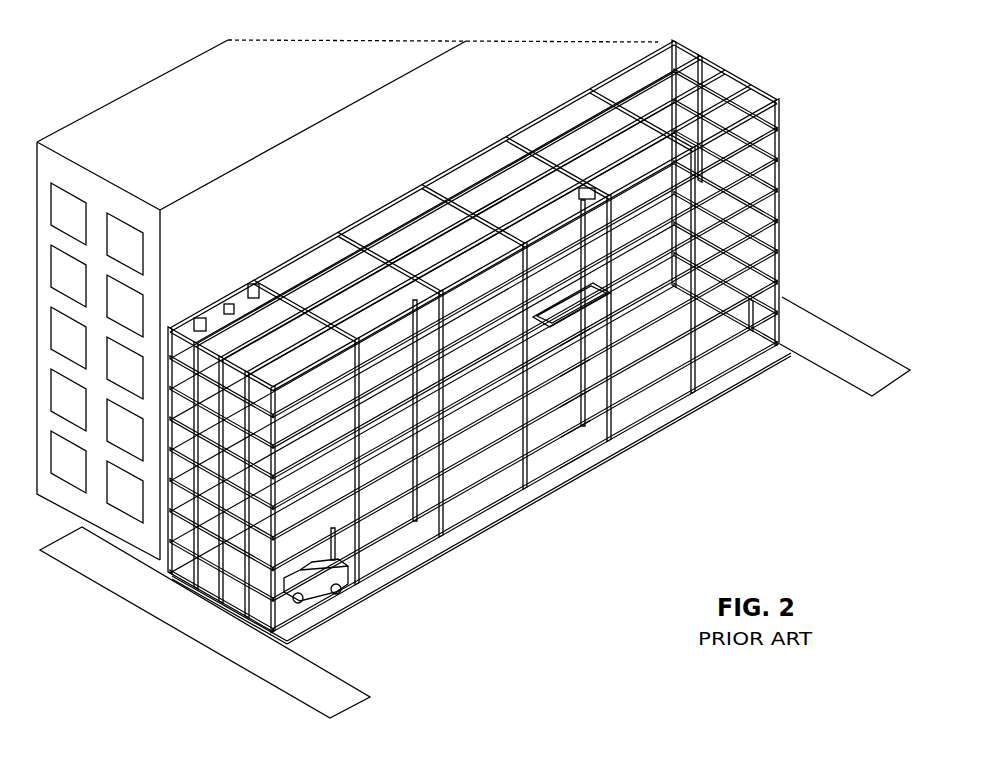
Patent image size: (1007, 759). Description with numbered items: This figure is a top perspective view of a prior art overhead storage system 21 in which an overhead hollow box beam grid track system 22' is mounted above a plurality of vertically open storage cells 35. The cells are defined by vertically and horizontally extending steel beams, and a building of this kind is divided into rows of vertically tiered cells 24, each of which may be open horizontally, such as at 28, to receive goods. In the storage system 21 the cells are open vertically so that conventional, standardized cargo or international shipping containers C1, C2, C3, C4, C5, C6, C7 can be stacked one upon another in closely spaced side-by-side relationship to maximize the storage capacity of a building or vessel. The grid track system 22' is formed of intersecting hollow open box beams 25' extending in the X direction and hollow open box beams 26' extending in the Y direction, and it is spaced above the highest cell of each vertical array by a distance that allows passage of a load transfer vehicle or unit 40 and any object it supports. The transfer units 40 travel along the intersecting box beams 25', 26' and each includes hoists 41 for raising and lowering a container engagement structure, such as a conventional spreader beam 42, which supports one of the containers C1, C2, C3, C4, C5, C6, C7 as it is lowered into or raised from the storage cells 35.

The overhead storage system 21 is at (797, 89).
The overhead grid track system 22' is at (481, 216).
The vertically tiered cells 24 is at (452, 514).
The X oriented hollow open box beam 25' is at (496, 216).
The Y oriented hollow open box beam 26' is at (476, 197).
The horizontal cell opening 28 is at (765, 272).
The vertically open storage cell 35 is at (655, 63).
The load transfer vehicle or unit 40 is at (591, 186).
The hoist 41 is at (253, 296).
The spreader beam 42 is at (293, 298).
The container C1 is at (575, 451).
The container C2 is at (575, 422).
The container C3 is at (575, 392).
The container C4 is at (575, 361).
The container C5 is at (575, 332).
The container C6 is at (487, 199).
The container C7 is at (400, 250).